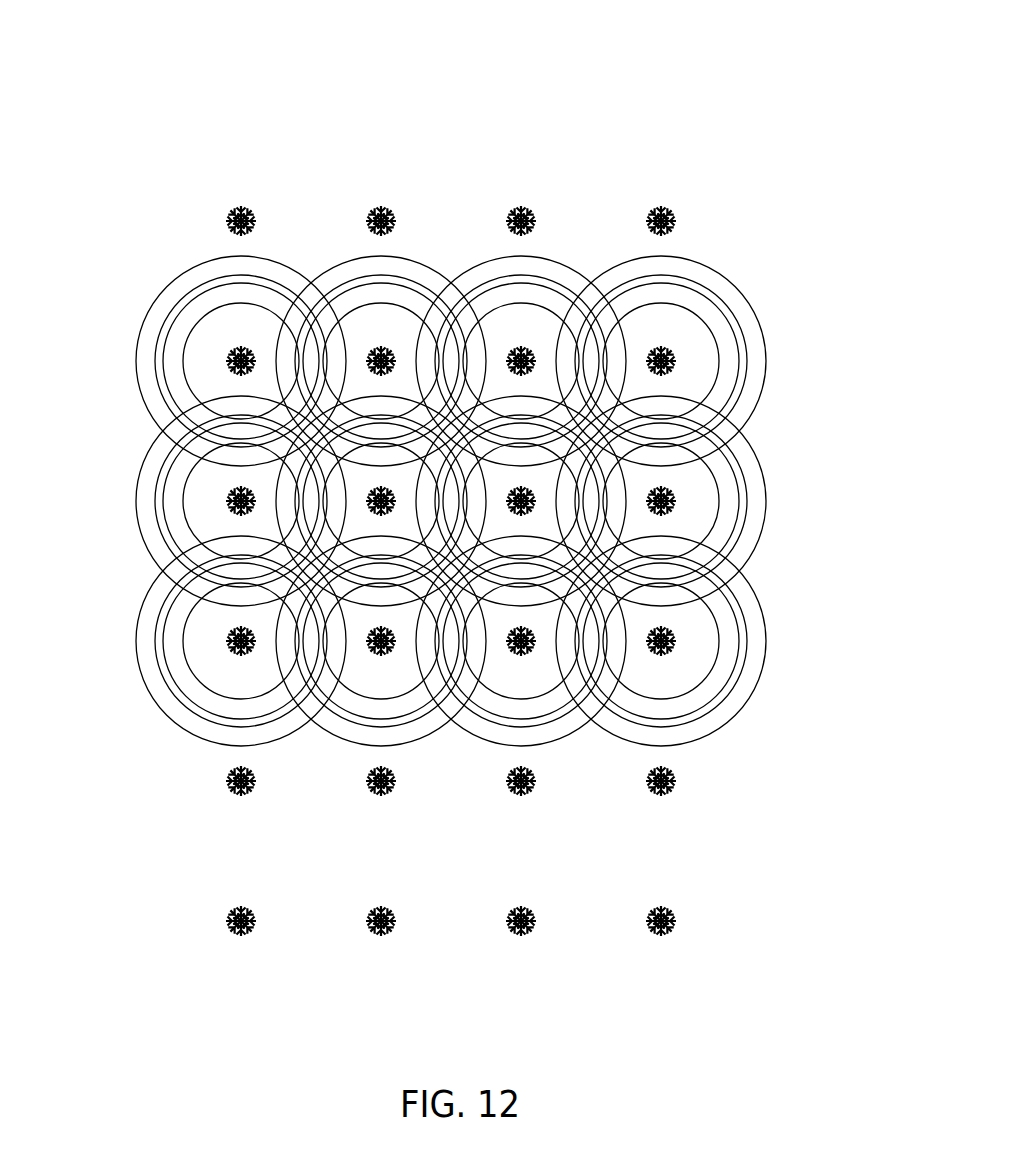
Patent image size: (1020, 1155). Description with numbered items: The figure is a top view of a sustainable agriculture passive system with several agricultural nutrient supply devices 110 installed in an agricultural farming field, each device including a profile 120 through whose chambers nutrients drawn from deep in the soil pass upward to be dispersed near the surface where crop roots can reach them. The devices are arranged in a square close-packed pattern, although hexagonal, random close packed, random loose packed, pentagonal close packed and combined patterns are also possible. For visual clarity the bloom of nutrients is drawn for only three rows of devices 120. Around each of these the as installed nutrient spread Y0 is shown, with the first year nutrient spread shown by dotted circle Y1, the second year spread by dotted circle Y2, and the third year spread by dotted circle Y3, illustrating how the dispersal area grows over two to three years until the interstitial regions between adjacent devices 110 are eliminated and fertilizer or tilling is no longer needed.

The agricultural nutrient supply device 110 is at (150, 242).
The profile 120 is at (385, 345).
The as installed nutrient spread Y0 is at (677, 305).
The first year nutrients spread Y1 is at (732, 312).
The second year nutrients spread Y2 is at (757, 343).
The third year nutrients spread Y3 is at (748, 415).